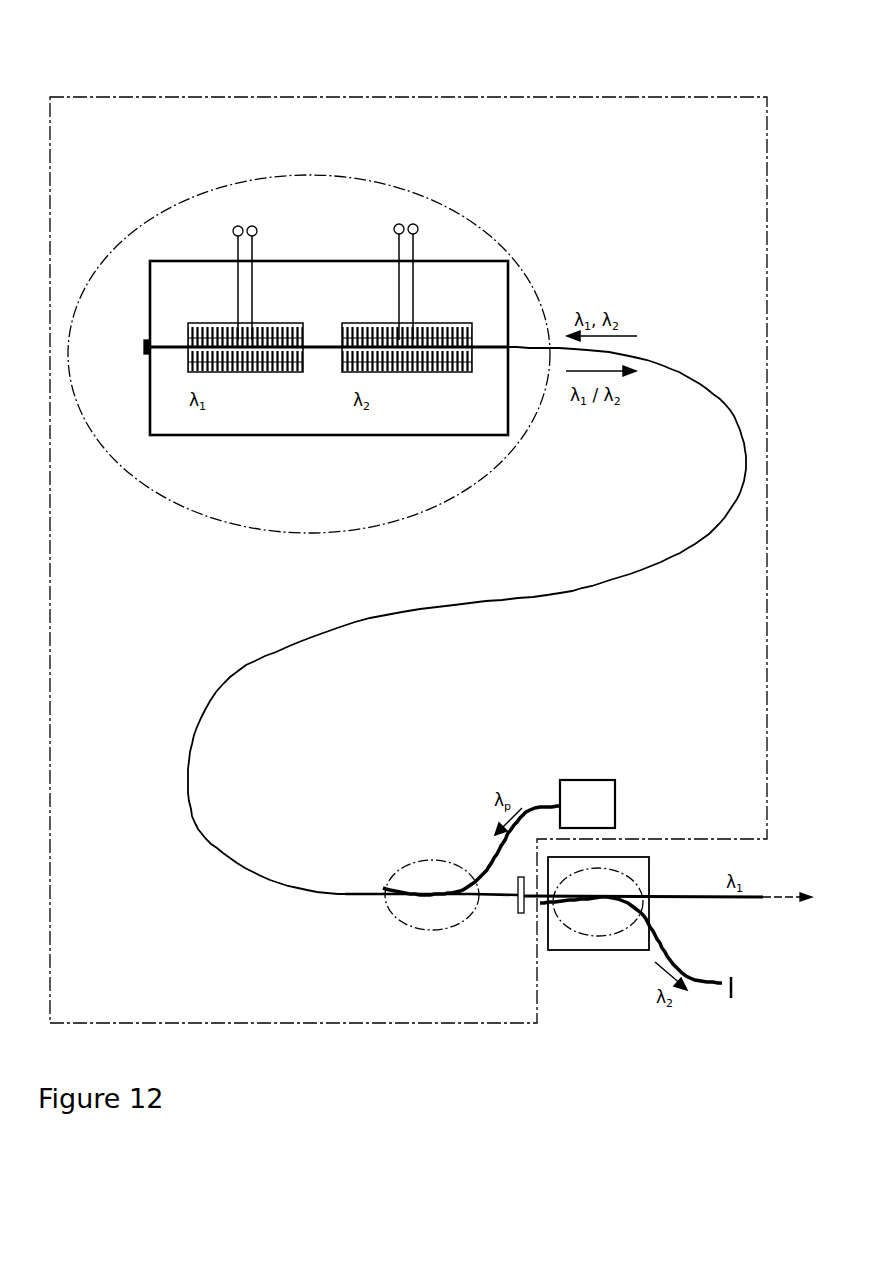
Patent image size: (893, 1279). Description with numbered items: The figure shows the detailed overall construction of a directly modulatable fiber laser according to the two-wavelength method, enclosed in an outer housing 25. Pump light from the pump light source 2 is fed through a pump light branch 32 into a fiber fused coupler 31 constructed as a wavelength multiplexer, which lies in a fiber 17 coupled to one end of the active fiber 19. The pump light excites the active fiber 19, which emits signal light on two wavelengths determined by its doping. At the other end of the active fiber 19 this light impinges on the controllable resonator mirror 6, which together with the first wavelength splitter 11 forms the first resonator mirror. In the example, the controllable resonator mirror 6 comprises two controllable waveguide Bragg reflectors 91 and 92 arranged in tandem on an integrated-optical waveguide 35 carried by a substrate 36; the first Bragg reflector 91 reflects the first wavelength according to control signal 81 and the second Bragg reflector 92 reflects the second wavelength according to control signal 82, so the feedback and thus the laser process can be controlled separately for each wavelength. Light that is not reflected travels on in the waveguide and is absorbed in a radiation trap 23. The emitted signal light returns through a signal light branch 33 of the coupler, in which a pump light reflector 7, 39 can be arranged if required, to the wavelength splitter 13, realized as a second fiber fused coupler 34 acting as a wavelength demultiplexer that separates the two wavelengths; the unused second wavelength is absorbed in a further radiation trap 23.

The housing 25 is at (647, 97).
The controllable resonator mirror 6 is at (343, 354).
The first wavelength splitter 11 is at (520, 268).
The substrate 36 is at (329, 348).
The integrated-optical waveguide 35 is at (168, 345).
The radiation trap 23 is at (143, 352).
The controllable waveguide Bragg reflector 91 is at (252, 372).
The controllable waveguide Bragg reflector 92 is at (407, 372).
The control signal 81 is at (253, 215).
The control signal 82 is at (408, 217).
The active fiber 19 is at (562, 593).
The fiber 17 is at (368, 897).
The fiber fused coupler 31 is at (420, 928).
The signal light branch 33 is at (490, 900).
The pump light source 2 is at (611, 778).
The pump light branch 32 is at (478, 872).
The optical isolator 7 is at (503, 942).
The pump light reflector 39 is at (518, 918).
The wavelength splitter 13 is at (635, 857).
The second fiber fused coupler 34 is at (590, 937).